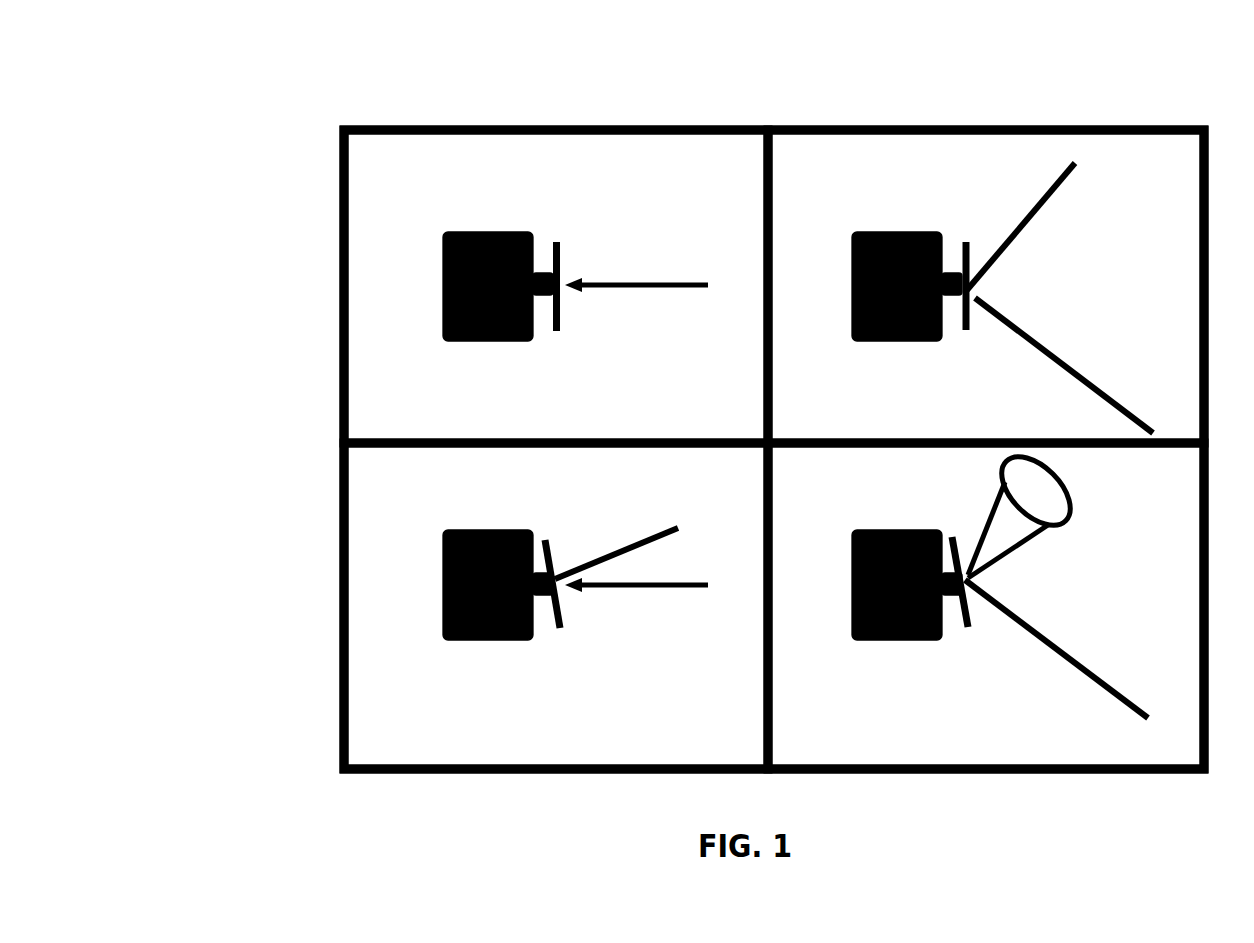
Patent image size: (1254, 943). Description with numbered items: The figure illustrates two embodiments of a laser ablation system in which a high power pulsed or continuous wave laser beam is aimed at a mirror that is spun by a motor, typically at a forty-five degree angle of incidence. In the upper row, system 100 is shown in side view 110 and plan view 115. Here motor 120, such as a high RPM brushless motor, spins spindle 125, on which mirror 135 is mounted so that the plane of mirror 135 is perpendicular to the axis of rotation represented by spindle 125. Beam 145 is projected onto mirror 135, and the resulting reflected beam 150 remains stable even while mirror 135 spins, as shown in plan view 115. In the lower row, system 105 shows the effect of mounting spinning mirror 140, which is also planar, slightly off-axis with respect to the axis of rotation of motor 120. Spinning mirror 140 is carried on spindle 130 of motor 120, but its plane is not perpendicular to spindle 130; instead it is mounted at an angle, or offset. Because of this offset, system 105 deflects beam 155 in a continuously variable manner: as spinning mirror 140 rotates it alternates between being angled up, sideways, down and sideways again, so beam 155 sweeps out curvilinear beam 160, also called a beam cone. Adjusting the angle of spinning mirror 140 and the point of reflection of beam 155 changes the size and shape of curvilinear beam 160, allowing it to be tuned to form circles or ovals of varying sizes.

The system 100 is at (327, 307).
The system 105 is at (327, 592).
The side view 110 is at (540, 130).
The plan view 115 is at (958, 126).
The motor 120 is at (488, 255).
The spindle 125 is at (541, 297).
The spindle 130 is at (541, 598).
The mirror 135 is at (560, 258).
The spinning mirror 140 is at (560, 620).
The beam 145 is at (626, 290).
The reflected beam 150 is at (1045, 202).
The beam 155 is at (676, 590).
The curvilinear beam 160 is at (605, 552).